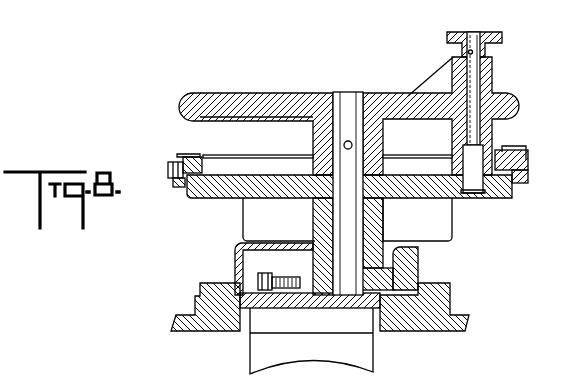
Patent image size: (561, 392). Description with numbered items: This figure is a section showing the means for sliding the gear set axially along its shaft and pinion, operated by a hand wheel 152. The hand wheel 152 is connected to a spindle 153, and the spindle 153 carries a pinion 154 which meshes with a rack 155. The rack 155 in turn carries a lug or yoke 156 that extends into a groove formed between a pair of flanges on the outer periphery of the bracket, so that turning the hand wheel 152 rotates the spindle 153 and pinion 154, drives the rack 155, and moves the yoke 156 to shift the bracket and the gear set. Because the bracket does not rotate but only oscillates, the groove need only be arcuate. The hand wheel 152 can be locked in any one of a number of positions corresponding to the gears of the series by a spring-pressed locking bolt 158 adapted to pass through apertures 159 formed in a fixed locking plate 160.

The hand wheel 152 is at (263, 76).
The spindle 153 is at (450, 190).
The pinion 154 is at (395, 272).
The rack 155 is at (289, 272).
The lug or yoke 156 is at (365, 355).
The spring-pressed locking bolt 158 is at (470, 96).
The apertures 159 is at (481, 194).
The fixed locking plate 160 is at (442, 193).